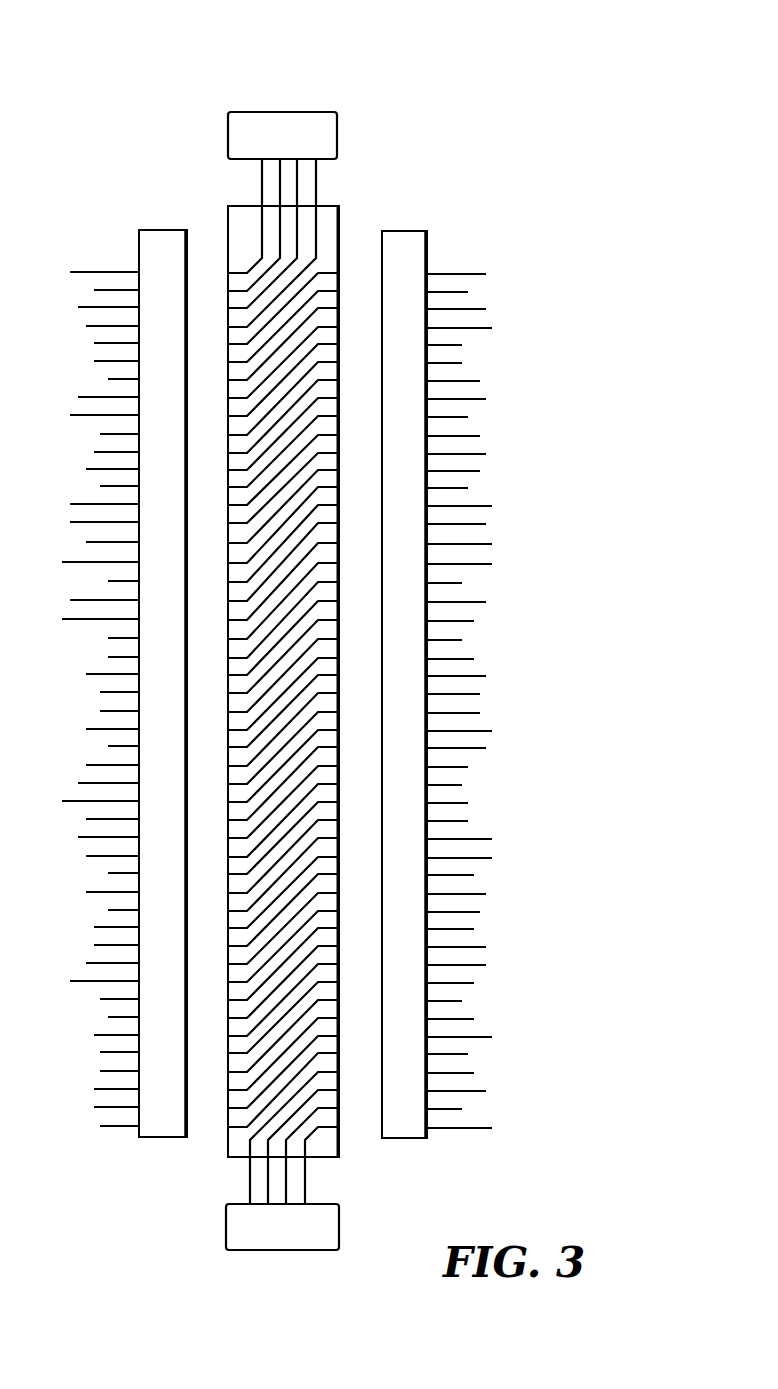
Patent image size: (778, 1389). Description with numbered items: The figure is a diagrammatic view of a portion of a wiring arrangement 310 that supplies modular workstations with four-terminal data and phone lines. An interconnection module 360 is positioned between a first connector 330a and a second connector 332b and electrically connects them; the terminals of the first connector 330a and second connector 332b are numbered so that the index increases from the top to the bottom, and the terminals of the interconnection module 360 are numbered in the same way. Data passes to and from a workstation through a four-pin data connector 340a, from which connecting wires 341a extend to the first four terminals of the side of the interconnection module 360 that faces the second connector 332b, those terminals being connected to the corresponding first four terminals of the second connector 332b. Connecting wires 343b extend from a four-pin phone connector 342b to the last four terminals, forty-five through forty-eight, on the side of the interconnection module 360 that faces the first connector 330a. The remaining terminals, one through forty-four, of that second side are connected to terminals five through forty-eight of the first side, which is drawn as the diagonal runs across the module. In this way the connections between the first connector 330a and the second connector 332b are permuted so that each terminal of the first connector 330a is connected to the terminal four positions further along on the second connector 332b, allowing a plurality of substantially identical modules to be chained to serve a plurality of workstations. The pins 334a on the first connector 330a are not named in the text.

The wiring arrangement 310 is at (463, 107).
The first connector 330a is at (401, 233).
The second connector 332b is at (156, 238).
The contact pins 334a is at (499, 453).
The data connector 340a is at (332, 108).
The connecting wires 341a is at (335, 192).
The phone connector 342b is at (227, 1259).
The connecting wires 343b is at (229, 1173).
The interconnection module 360 is at (237, 96).